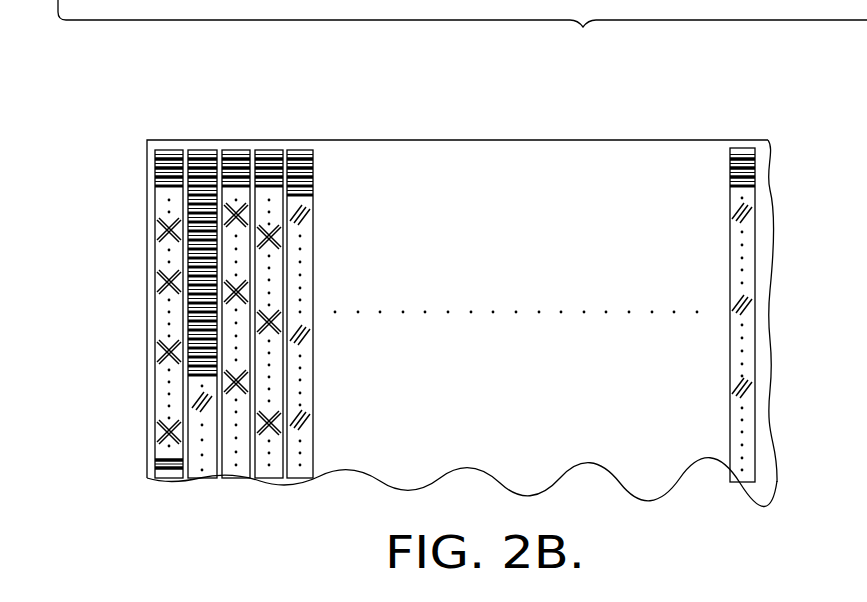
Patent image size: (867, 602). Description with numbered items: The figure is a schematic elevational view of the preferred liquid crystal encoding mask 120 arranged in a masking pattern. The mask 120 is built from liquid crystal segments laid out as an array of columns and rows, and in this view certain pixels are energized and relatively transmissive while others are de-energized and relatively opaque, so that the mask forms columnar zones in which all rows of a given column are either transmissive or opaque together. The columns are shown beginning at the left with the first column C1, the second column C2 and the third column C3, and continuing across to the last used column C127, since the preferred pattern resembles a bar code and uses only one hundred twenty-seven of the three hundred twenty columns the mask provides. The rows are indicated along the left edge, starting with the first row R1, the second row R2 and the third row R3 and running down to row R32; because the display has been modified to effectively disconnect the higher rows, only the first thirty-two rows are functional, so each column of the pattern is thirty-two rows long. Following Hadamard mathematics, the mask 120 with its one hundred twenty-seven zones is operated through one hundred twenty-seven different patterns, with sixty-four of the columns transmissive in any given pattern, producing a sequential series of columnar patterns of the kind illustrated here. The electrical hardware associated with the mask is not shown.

The encoding mask 120 is at (688, 86).
The first column C1 is at (168, 147).
The second column C2 is at (203, 147).
The third column C3 is at (237, 147).
The column 127 C127 is at (744, 145).
The first row R1 is at (146, 155).
The second row R2 is at (146, 164).
The third row R3 is at (146, 172).
The row 32 R32 is at (146, 465).